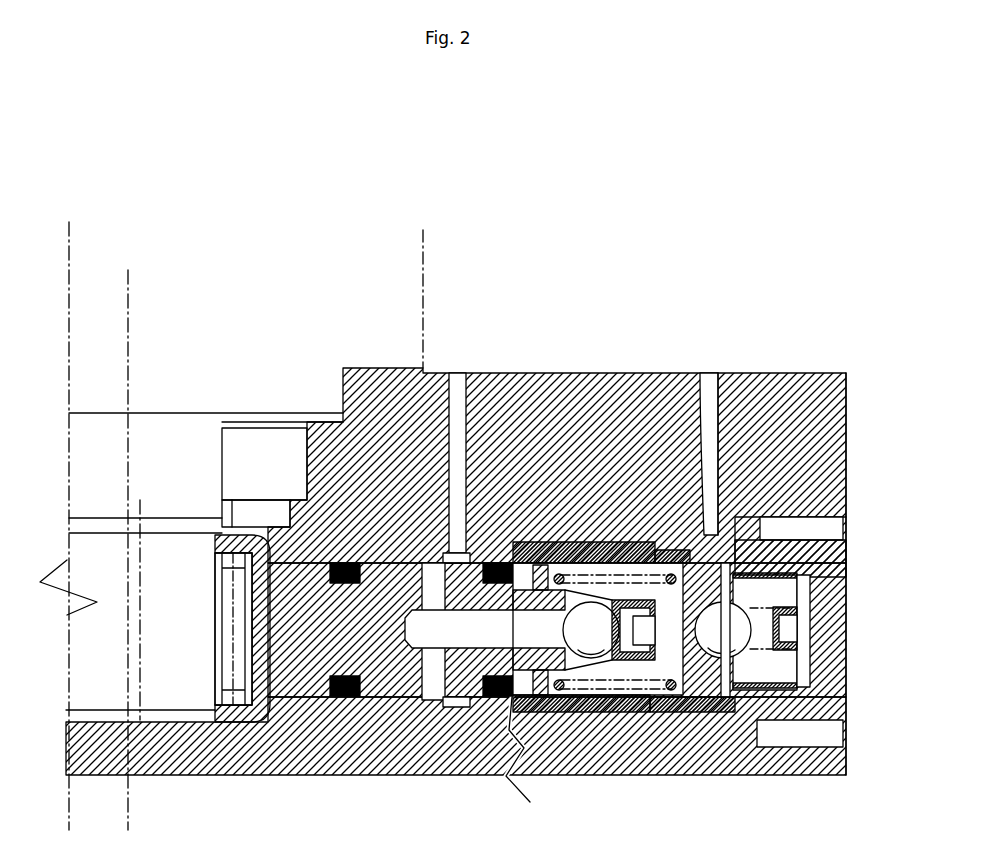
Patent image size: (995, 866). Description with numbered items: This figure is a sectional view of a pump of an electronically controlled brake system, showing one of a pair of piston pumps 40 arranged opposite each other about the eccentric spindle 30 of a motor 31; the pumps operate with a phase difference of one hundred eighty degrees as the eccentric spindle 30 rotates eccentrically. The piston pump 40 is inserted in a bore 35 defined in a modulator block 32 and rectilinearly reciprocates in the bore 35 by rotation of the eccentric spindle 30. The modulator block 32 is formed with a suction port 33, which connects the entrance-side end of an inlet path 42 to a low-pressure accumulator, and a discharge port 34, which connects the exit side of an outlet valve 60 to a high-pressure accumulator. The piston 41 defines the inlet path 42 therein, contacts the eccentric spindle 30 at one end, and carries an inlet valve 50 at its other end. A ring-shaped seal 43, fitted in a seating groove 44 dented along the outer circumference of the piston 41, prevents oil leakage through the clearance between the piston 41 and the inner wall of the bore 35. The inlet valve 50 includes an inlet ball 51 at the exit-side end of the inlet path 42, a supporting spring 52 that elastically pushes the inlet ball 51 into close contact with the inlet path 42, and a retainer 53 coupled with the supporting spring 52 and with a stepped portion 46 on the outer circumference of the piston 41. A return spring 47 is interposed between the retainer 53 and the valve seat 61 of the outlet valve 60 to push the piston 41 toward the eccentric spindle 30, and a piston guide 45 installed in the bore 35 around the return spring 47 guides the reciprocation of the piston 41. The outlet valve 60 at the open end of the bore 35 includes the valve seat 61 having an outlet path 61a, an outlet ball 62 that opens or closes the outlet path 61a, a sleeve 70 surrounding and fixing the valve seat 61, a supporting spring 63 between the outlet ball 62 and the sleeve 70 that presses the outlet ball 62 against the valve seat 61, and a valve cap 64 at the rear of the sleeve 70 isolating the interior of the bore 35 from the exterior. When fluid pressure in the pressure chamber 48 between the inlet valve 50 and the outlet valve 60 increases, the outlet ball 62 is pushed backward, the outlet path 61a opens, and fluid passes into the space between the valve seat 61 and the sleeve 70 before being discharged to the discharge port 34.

The eccentric spindle 30 is at (178, 697).
The motor 31 is at (412, 283).
The modulator block 32 is at (592, 362).
The suction port 33 is at (458, 398).
The discharge port 34 is at (711, 377).
The bore 35 is at (588, 723).
The piston pump 40 is at (488, 712).
The piston 41 is at (383, 684).
The inlet path 42 is at (446, 634).
The seal 43 is at (498, 565).
The seating groove 44 is at (540, 568).
The piston guide 45 is at (606, 560).
The stepped portion 46 is at (560, 578).
The return spring 47 is at (720, 470).
The pressure chamber 48 is at (680, 655).
The inlet valve 50 is at (593, 662).
The inlet ball 51 is at (598, 612).
The supporting spring 52 is at (650, 600).
The retainer 53 is at (625, 602).
The outlet valve 60 is at (760, 692).
The valve seat 61 is at (762, 488).
The outlet path 61a is at (773, 540).
The outlet ball 62 is at (790, 563).
The supporting spring 63 is at (768, 653).
The valve cap 64 is at (785, 712).
The sleeve 70 is at (800, 657).